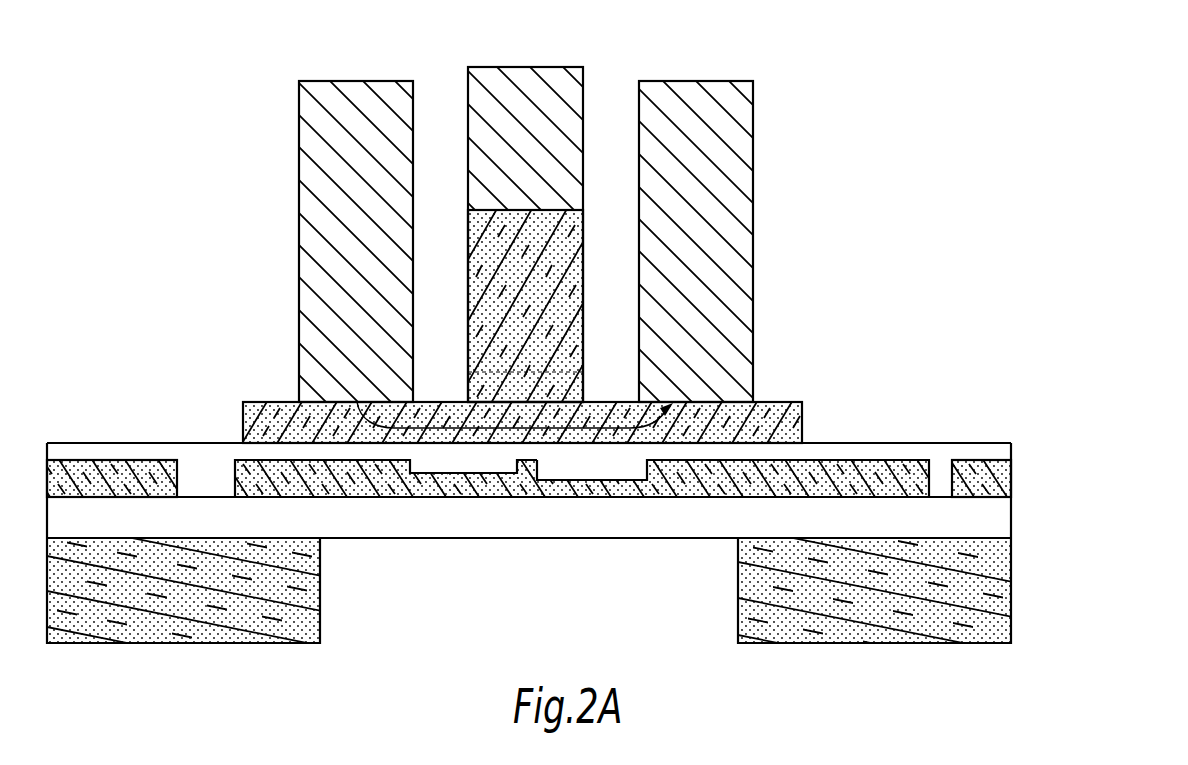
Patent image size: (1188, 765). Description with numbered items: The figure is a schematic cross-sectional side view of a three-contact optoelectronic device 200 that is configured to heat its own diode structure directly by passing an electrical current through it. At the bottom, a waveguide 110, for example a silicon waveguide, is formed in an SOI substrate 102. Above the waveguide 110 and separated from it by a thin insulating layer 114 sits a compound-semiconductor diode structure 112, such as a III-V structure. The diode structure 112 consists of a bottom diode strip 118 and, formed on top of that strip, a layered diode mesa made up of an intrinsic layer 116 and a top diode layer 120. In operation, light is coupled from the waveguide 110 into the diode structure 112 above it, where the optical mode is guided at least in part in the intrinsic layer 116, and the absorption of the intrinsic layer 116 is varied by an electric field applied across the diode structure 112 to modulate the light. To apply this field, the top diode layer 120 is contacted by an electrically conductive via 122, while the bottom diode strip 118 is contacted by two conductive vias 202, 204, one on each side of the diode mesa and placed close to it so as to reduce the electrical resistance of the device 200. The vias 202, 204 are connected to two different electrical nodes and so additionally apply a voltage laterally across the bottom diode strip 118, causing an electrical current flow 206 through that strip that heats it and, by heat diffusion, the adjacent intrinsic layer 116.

The three-contact optoelectronic device 200 is at (1070, 92).
The via (S2A) 202 is at (309, 81).
The via (S1) 122 is at (492, 67).
The via (S2B) 204 is at (650, 81).
The top diode layer 120 is at (480, 242).
The bottom diode strip 118 is at (806, 412).
The compound-semiconductor diode structure 112 is at (863, 225).
The thin insulating layer 114 is at (1013, 452).
The waveguide 110 is at (540, 465).
The SOI substrate 102 is at (1087, 468).
The electrical current flow 206 is at (452, 402).
The intrinsic layer 116 is at (516, 388).